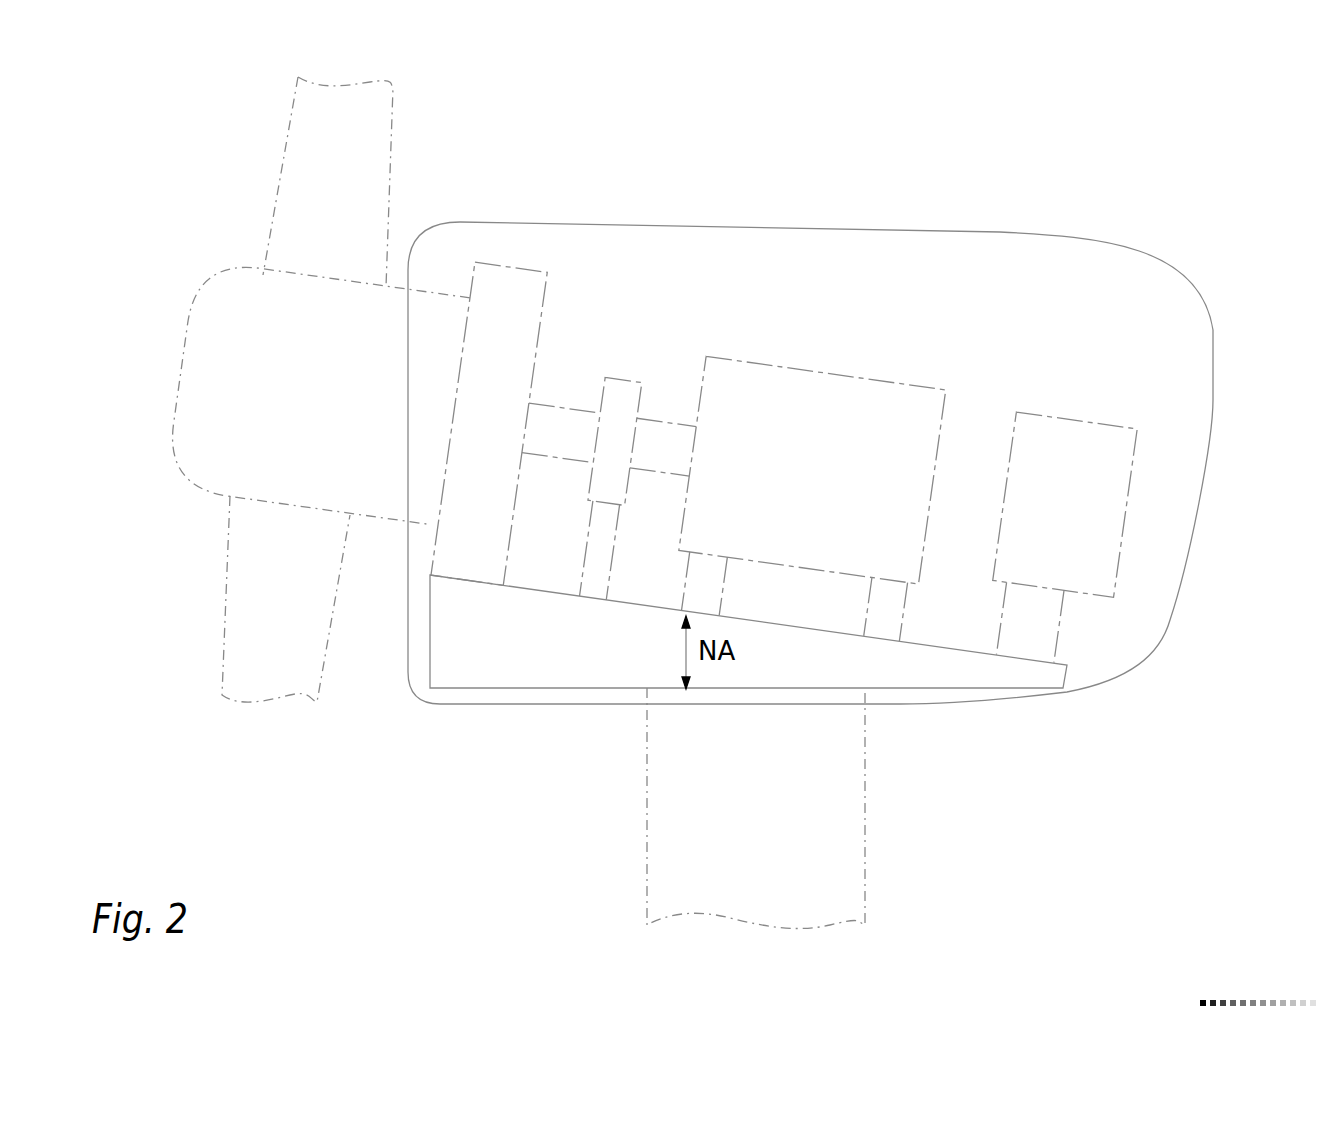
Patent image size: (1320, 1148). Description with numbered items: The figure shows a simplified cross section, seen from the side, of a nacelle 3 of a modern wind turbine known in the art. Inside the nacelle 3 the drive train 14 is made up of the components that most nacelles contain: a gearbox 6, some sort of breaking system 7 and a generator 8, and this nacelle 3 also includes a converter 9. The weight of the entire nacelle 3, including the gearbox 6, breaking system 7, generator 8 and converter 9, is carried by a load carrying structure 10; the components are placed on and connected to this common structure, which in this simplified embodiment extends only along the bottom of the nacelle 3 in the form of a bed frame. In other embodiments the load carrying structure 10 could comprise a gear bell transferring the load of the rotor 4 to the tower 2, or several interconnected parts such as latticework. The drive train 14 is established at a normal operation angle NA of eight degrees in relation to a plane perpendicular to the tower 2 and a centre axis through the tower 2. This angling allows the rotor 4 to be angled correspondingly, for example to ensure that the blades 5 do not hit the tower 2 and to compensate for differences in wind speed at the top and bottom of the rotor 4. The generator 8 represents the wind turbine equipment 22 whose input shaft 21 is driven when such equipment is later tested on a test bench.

The tower 2 is at (785, 857).
The nacelle 3 is at (1247, 262).
The rotor 4 is at (237, 345).
The blades 5 is at (353, 173).
The gearbox 6 is at (508, 298).
The breaking system 7 is at (623, 403).
The generator 8 is at (777, 413).
The converter 9 is at (1085, 465).
The load carrying structure 10 is at (1020, 675).
The drive train 14 is at (655, 458).
The input shaft 21 is at (667, 445).
The equipment 22 is at (900, 348).